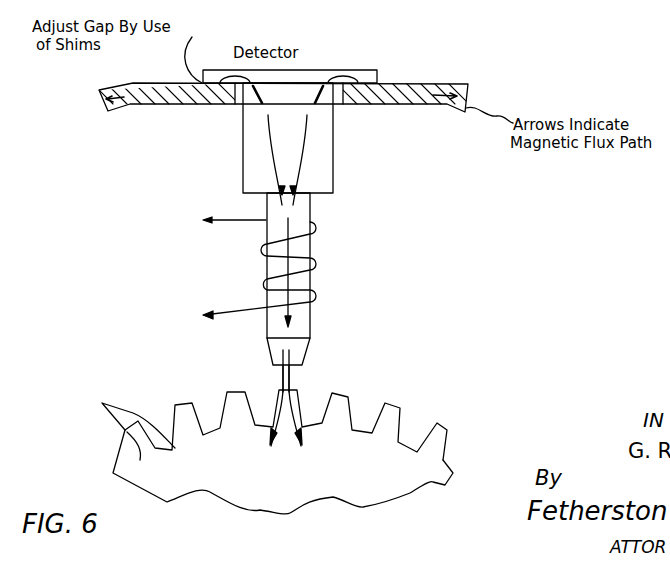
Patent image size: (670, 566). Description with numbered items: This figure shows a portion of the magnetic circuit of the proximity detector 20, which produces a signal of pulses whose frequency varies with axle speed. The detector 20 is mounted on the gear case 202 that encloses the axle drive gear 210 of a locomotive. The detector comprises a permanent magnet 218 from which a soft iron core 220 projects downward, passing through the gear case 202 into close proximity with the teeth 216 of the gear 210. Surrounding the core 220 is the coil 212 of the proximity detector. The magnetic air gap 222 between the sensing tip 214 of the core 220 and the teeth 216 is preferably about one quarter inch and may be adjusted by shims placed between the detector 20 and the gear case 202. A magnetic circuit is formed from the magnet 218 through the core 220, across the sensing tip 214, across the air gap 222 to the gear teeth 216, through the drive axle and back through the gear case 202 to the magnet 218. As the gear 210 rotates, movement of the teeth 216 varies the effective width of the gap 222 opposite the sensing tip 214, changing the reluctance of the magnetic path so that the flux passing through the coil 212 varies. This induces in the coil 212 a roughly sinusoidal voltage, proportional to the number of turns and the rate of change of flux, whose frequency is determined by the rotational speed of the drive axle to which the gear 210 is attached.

The detector 20 is at (344, 68).
The gear case 202 is at (417, 83).
The permanent magnet 218 is at (333, 155).
The coil 212 is at (262, 250).
The soft iron core 220 is at (306, 280).
The sensing tip 214 is at (280, 370).
The air gap 222 is at (297, 375).
The axle drive gear 210 is at (237, 446).
The gear teeth 216 is at (400, 405).